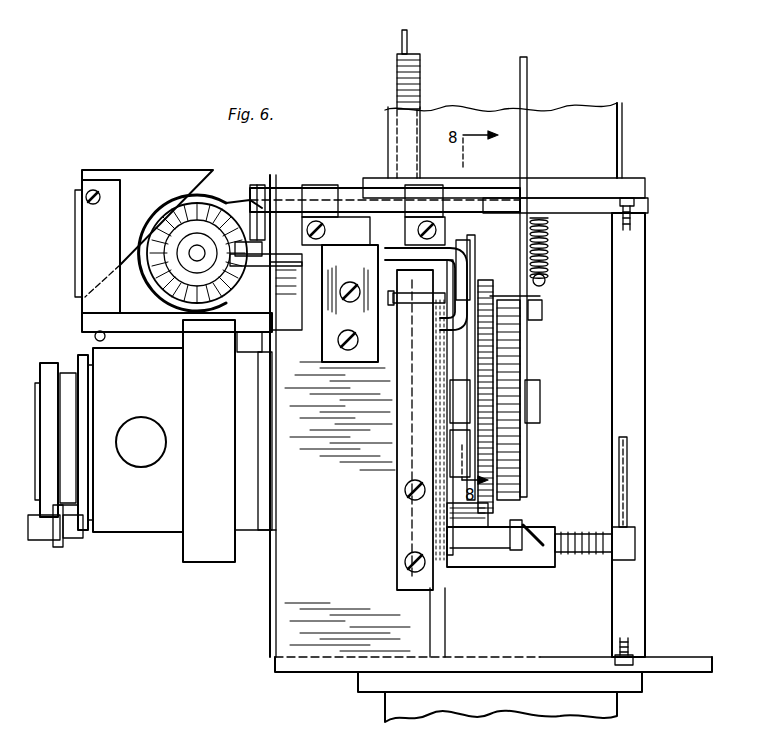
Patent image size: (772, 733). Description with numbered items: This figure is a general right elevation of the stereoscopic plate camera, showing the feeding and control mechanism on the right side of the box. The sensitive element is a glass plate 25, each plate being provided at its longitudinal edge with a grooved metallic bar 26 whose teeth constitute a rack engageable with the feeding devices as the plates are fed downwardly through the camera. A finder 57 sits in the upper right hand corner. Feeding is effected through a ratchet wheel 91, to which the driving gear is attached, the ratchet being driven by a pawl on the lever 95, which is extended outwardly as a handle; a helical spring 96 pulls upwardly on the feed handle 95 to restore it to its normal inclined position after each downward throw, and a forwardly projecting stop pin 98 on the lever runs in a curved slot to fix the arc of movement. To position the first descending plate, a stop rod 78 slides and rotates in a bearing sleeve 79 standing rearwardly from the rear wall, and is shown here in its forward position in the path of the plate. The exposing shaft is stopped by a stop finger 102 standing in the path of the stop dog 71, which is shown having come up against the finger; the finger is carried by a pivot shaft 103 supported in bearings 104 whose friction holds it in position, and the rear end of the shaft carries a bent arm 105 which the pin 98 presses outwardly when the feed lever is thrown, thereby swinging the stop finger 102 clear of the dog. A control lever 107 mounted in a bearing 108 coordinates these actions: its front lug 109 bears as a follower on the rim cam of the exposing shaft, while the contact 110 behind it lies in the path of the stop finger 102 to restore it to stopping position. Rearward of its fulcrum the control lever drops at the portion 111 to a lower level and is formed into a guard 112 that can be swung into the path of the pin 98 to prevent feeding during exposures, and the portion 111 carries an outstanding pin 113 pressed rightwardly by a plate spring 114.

The glass plate 25 is at (410, 40).
The grooved metallic bar 26 is at (420, 76).
The lever 95 is at (528, 67).
The finder 57 is at (173, 255).
The stop finger 102 is at (265, 188).
The pivot shaft 103 is at (345, 188).
The bearings 104 is at (312, 188).
The bent arm 105 is at (470, 225).
The helical spring 96 is at (548, 250).
The control lever 107 is at (314, 255).
The bearing 108 is at (326, 315).
The lug 109 is at (208, 305).
The contact 110 is at (238, 265).
The stop dog 71 is at (255, 431).
The pin 113 is at (395, 298).
The dropped portion 111 is at (445, 313).
The stop pin 98 is at (490, 300).
The guard 112 is at (500, 318).
The plate spring 114 is at (400, 430).
The ratchet wheel 91 is at (522, 455).
The bearing sleeve 79 is at (508, 568).
The stop rod 78 is at (572, 568).